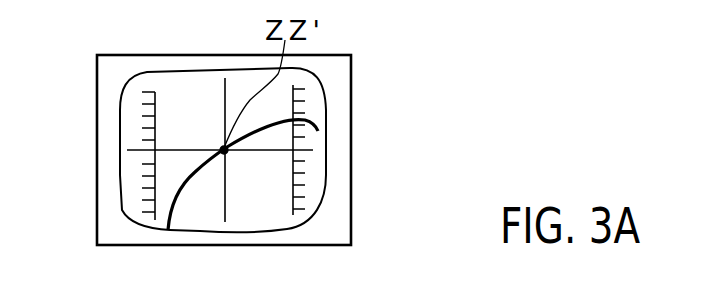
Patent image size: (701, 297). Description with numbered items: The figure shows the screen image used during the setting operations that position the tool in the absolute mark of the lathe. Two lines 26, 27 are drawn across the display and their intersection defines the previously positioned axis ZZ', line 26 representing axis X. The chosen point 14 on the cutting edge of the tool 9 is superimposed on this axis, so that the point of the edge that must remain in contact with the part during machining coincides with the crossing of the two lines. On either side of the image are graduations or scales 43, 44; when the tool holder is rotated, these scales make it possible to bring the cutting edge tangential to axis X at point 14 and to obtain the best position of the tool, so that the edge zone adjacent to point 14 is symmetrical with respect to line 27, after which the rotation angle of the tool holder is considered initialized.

The line 27 is at (225, 78).
The line 26 is at (312, 150).
The point 14 is at (222, 148).
The tool 9 is at (188, 188).
The graduation 43 is at (152, 202).
The graduation 44 is at (303, 210).